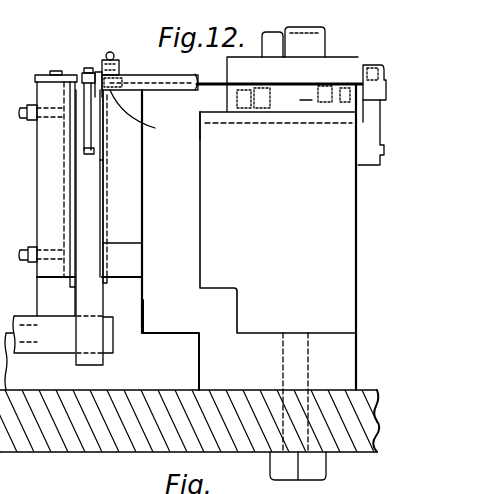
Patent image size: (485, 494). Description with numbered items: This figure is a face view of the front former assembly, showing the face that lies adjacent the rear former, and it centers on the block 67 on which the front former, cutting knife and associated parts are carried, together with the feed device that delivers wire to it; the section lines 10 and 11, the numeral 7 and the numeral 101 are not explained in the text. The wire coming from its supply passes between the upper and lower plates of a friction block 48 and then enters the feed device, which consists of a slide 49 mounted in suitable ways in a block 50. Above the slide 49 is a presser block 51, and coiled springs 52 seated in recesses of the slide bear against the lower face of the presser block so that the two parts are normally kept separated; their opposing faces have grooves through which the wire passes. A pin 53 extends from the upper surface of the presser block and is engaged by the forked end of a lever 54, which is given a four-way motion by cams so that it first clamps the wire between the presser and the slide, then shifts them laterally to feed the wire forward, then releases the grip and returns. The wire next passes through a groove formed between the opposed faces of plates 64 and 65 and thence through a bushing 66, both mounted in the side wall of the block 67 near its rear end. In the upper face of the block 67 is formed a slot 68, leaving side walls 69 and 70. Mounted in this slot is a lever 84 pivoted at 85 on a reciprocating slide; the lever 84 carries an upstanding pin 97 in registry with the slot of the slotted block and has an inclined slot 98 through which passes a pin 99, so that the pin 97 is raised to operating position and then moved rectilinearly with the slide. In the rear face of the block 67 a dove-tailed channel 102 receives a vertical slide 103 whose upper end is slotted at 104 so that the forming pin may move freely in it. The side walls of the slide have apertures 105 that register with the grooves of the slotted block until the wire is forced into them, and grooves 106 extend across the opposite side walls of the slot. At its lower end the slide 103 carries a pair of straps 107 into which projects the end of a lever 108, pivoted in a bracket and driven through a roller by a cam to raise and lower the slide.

The frame 7 is at (5, 14).
The section line 10 is at (88, 51).
The section line 11 is at (110, 493).
The friction block 48 is at (363, 64).
The slide 49 is at (307, 103).
The block 50 is at (340, 190).
The presser block 51 is at (305, 68).
The coiled springs 52 is at (259, 85).
The pin 53 is at (306, 30).
The lever 54 is at (275, 48).
The plate 64 is at (157, 79).
The plate 65 is at (168, 92).
The bushing 66 is at (128, 140).
The block 67 is at (128, 300).
The slot 68 is at (145, 186).
The side wall 69 is at (146, 158).
The side wall 70 is at (52, 127).
The lever 84 is at (14, 183).
The pivot 85 is at (14, 211).
The upstanding pin 97 is at (14, 68).
The slot 98 is at (10, 152).
The pin 99 is at (10, 136).
The arm 101 is at (29, 160).
The dove-tailed channel 102 is at (108, 165).
The vertical slide 103 is at (142, 243).
The slot 104 is at (92, 121).
The apertures 105 is at (60, 69).
The grooves 106 is at (15, 93).
The straps 107 is at (76, 358).
The lever 108 is at (25, 323).